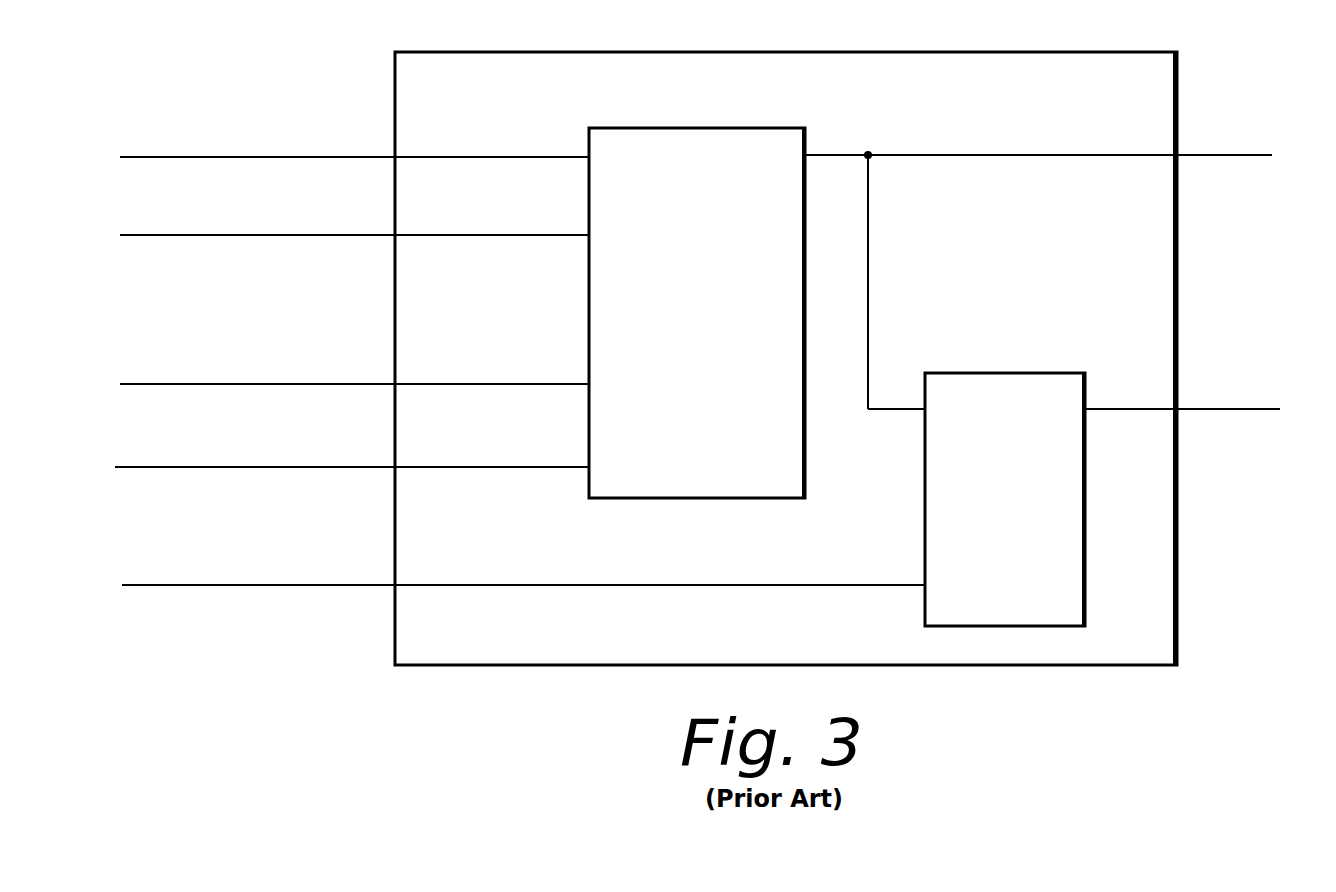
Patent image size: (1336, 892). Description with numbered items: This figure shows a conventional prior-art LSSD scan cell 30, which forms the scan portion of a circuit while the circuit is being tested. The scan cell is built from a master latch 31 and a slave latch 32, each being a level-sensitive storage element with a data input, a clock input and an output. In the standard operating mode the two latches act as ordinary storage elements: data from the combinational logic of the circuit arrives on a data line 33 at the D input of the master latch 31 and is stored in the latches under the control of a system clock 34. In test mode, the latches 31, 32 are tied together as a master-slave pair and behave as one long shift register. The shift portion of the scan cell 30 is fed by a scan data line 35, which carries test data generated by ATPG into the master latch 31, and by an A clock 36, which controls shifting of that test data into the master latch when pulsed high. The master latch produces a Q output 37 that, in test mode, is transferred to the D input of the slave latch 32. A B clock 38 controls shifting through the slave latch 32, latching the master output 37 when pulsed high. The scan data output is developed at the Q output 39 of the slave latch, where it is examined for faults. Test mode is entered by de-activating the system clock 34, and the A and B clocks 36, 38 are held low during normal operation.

The LSSD scan cell 30 is at (1212, 86).
The master latch 31 is at (769, 425).
The slave latch 32 is at (1024, 587).
The data line 33 is at (369, 157).
The system clock 34 is at (377, 235).
The scan data line 35 is at (375, 384).
The A clock 36 is at (378, 467).
The Q output 37 is at (828, 155).
The B clock 38 is at (388, 585).
The Q output 39 is at (1103, 409).